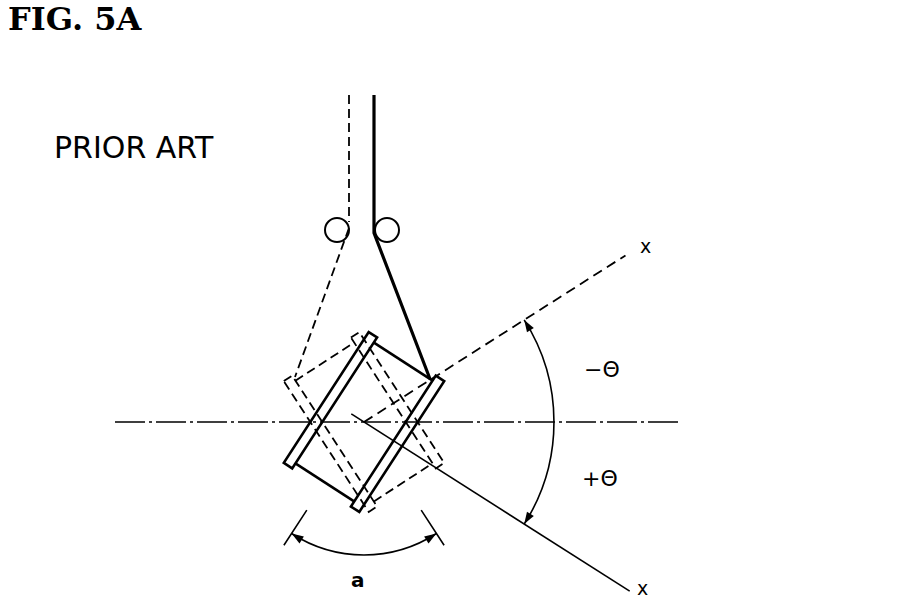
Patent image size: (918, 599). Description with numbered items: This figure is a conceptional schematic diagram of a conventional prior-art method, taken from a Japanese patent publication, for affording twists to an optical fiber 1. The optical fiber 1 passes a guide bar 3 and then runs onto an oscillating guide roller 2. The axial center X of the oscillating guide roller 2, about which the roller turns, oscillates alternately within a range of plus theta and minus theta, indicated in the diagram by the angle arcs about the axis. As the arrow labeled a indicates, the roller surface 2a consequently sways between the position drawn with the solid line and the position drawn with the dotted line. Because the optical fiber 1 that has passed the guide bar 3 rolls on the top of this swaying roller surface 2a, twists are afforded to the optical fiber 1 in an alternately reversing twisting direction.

The optical fiber 1 is at (374, 162).
The oscillating guide roller 2 is at (290, 444).
The roller surface 2a is at (390, 357).
The guide bar 3 is at (400, 227).